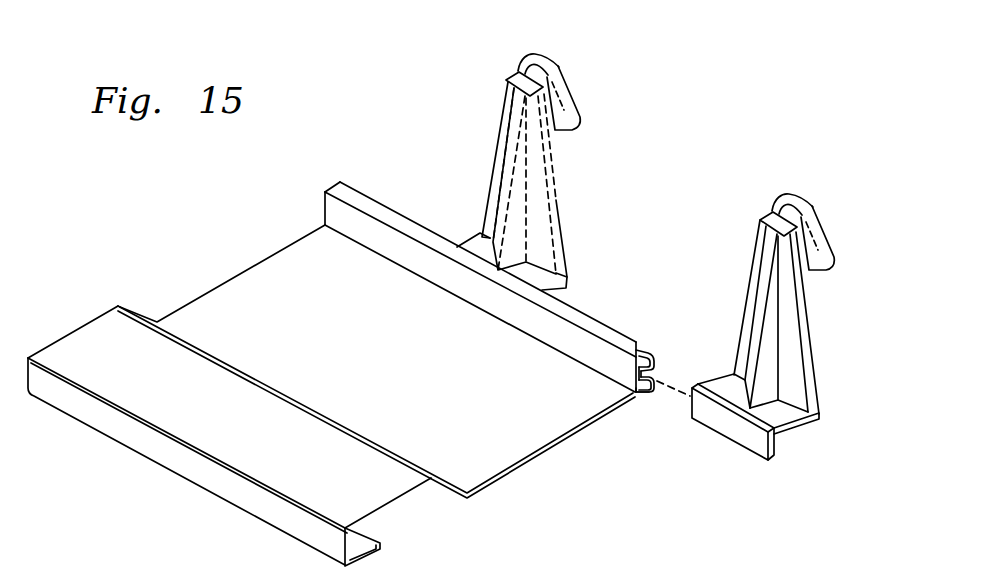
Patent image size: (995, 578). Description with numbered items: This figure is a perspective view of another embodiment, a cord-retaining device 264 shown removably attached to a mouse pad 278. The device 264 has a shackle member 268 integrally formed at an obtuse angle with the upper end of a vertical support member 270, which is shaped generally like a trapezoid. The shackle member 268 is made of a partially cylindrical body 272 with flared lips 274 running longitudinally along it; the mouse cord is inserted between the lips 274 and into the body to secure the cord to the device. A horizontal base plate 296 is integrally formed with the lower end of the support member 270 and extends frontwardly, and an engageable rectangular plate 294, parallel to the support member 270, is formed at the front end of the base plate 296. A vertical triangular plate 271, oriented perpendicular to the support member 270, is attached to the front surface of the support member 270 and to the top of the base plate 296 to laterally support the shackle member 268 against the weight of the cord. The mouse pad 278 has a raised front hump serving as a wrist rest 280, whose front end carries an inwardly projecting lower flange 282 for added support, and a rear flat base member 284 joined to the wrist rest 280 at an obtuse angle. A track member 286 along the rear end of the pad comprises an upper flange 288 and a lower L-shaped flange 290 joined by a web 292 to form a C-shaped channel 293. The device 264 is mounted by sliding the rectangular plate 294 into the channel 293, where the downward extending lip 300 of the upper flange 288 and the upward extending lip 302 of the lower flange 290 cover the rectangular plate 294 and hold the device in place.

The device 264 is at (780, 327).
The shackle member 268 is at (820, 232).
The vertical support member 270 is at (807, 343).
The vertical triangular plate 271 is at (771, 368).
The partially cylindrical body 272 is at (803, 272).
The flared lips 274 is at (786, 199).
The mouse pad 278 is at (50, 343).
The wrist rest 280 is at (117, 327).
The lower flange 282 is at (368, 557).
The flat base member 284 is at (262, 278).
The track member 286 is at (493, 294).
The upper flange 288 is at (615, 325).
The lower L-shaped flange 290 is at (645, 393).
The web 292 is at (335, 213).
The C-shaped channel 293 is at (652, 368).
The rectangular plate 294 is at (758, 448).
The horizontal base plate 296 is at (802, 428).
The downward extending lip 300 is at (662, 341).
The upward extending lip 302 is at (656, 378).